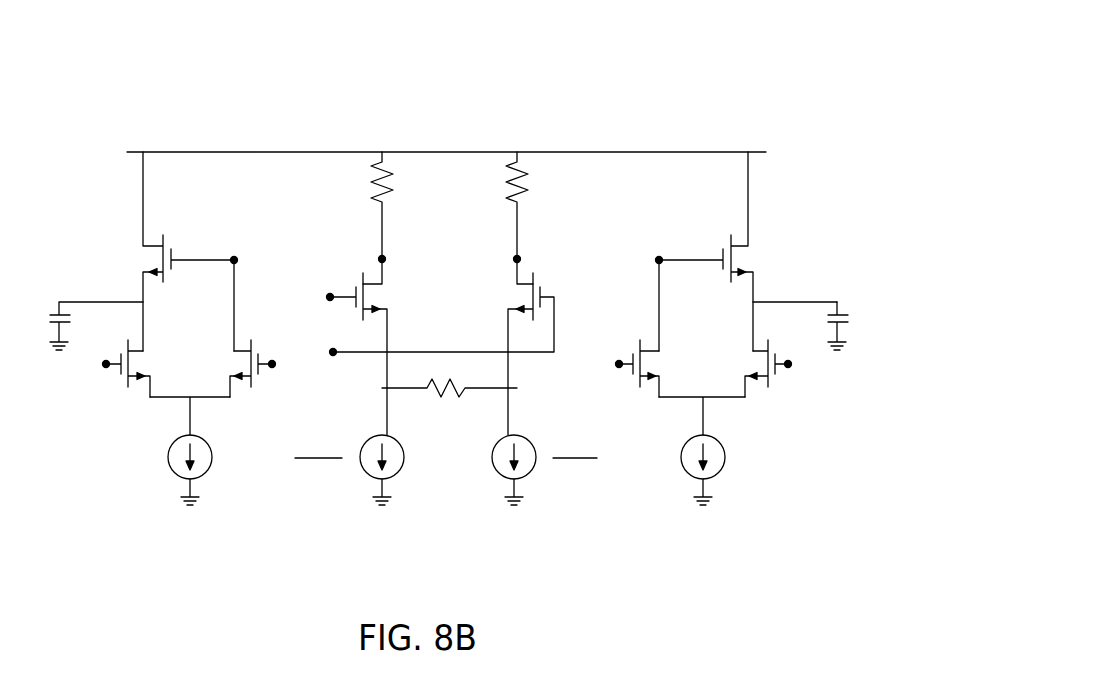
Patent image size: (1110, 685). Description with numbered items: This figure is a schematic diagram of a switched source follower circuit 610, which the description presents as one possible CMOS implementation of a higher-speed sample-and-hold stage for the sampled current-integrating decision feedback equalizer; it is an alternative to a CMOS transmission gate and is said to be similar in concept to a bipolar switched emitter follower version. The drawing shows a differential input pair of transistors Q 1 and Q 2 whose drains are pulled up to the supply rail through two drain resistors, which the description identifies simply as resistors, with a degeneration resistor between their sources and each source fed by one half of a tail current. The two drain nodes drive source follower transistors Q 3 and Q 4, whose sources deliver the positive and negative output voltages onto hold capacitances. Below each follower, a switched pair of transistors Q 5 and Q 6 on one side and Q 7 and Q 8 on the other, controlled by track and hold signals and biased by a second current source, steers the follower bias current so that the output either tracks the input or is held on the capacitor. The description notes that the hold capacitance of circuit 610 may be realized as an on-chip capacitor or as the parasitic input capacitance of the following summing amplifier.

The switched source follower circuit 610 is at (425, 27).
The transistor Q1 1 is at (371, 354).
The transistor Q2 2 is at (442, 354).
The transistor Q3 3 is at (723, 251).
The transistor Q4 4 is at (165, 251).
The transistor Q5 5 is at (652, 368).
The transistor Q6 6 is at (749, 368).
The transistor Q7 7 is at (140, 368).
The transistor Q8 8 is at (236, 368).